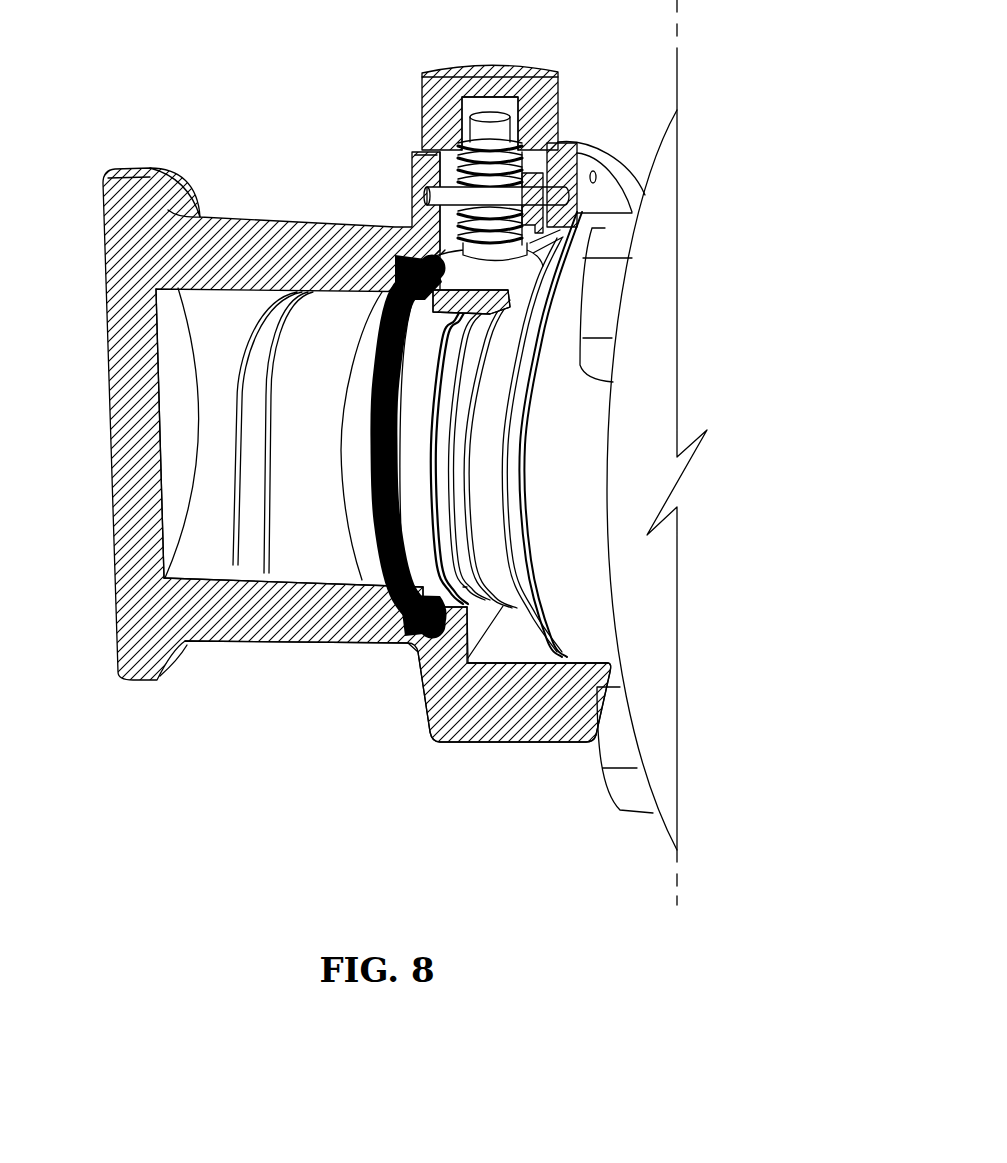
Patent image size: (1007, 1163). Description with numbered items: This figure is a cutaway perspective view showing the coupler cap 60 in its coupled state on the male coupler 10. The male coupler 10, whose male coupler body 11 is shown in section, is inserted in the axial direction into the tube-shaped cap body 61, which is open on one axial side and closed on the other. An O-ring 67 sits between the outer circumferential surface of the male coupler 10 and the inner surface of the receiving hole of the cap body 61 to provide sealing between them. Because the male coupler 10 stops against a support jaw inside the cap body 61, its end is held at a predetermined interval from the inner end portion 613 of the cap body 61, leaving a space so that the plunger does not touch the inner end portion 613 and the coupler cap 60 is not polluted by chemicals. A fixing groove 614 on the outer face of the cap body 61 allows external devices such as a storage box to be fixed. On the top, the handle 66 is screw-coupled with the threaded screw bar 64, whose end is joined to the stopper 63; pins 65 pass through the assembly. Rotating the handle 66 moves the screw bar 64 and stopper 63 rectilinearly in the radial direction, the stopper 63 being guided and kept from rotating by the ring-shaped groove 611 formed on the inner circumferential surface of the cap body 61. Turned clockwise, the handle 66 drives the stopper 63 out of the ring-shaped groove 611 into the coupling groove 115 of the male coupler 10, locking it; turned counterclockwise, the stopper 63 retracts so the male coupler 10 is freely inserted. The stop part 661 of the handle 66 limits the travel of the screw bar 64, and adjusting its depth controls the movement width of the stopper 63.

The coupler cap 60 is at (181, 158).
The cap body 61 is at (543, 712).
The ring-shaped groove 611 is at (500, 652).
The inner end portion 613 is at (178, 323).
The fixing groove 614 is at (252, 645).
The stopper 63 is at (463, 300).
The screw bar 64 is at (522, 140).
The pins 65 is at (430, 193).
The handle 66 is at (533, 88).
The stop part 661 is at (488, 98).
The O-ring 67 is at (392, 617).
The male coupler 10 is at (234, 576).
The male coupler body 11 is at (330, 325).
The coupling groove 115 is at (455, 615).